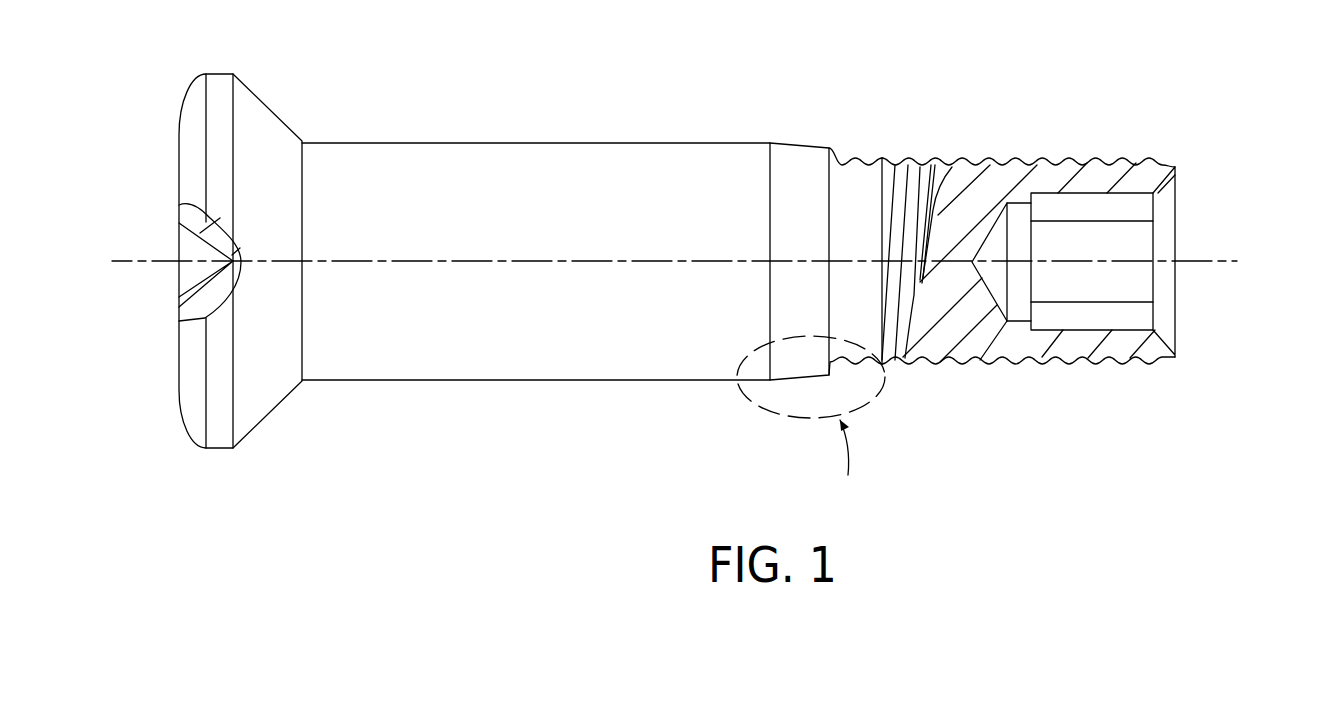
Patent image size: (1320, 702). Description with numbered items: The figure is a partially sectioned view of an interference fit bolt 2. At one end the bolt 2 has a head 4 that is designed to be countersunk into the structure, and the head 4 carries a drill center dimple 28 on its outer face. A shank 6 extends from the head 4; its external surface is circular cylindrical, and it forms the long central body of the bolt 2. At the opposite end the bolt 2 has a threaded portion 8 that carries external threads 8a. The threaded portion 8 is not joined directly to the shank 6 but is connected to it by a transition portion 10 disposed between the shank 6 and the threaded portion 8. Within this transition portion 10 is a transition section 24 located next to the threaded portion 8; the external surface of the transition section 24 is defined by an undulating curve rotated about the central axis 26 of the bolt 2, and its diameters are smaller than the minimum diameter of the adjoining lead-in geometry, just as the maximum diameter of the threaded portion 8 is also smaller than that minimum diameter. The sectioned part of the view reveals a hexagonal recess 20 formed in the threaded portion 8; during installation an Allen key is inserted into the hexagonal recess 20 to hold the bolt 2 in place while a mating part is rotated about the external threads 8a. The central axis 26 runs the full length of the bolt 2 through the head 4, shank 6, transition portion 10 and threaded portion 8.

The interference fit bolt 2 is at (677, 92).
The head 4 is at (265, 104).
The shank 6 is at (488, 381).
The threaded portion 8 is at (1172, 167).
The external threads 8a is at (1073, 162).
The transition portion 10 is at (800, 382).
The hexagonal recess 20 is at (1123, 330).
The transition section 24 is at (862, 370).
The central axis 26 is at (1223, 257).
The drill center dimple 28 is at (190, 285).